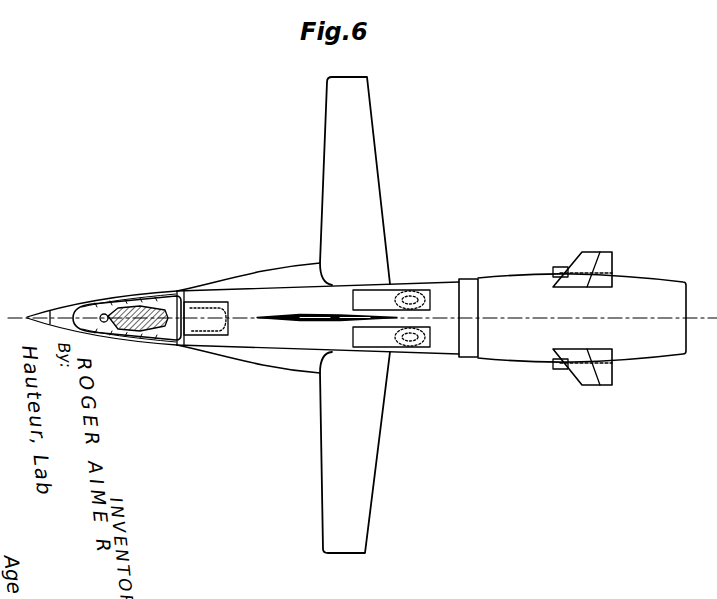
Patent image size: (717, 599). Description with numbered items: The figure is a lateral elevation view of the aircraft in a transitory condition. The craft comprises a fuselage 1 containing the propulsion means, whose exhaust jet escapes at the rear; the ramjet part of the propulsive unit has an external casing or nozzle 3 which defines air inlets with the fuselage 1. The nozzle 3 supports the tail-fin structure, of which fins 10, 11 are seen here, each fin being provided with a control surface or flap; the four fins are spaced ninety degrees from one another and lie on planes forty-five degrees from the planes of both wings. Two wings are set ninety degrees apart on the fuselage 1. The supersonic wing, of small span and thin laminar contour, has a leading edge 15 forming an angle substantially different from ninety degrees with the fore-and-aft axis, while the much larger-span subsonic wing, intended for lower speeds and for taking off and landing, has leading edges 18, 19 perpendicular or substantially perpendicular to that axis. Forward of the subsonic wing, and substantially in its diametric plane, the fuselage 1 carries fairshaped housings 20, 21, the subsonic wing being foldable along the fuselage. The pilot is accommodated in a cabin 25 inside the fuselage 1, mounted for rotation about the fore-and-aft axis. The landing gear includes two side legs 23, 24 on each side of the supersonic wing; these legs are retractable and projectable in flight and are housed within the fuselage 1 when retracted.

The fuselage 1 is at (243, 318).
The nozzle 3 is at (572, 318).
The fin 10 is at (583, 258).
The fin 11 is at (582, 378).
The leading edge 15 is at (301, 322).
The leading edge 18 is at (323, 449).
The leading edge 19 is at (321, 223).
The fairshaped housing 20 is at (259, 360).
The fairshaped housing 21 is at (268, 272).
The side leg 23 is at (423, 349).
The side leg 24 is at (423, 292).
The cabin 25 is at (96, 312).